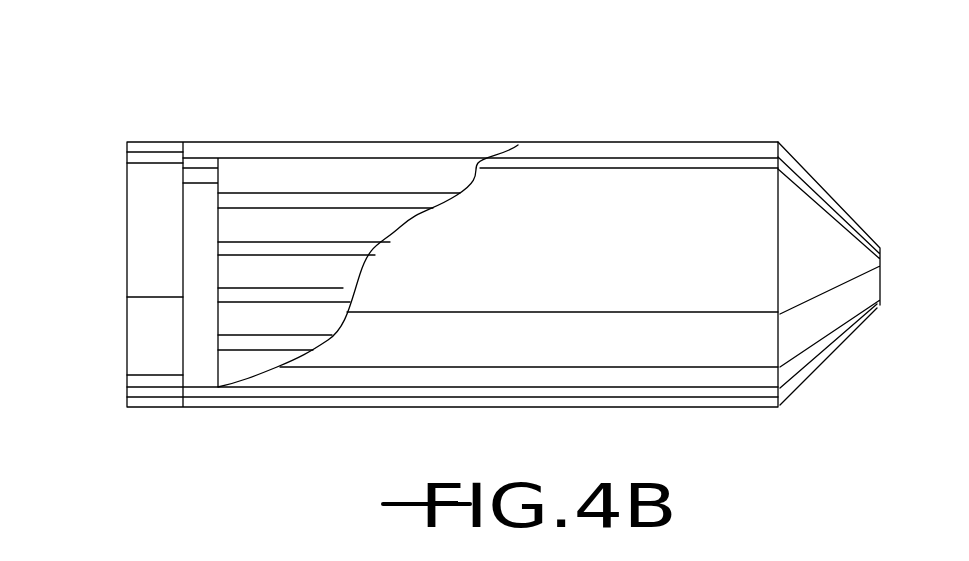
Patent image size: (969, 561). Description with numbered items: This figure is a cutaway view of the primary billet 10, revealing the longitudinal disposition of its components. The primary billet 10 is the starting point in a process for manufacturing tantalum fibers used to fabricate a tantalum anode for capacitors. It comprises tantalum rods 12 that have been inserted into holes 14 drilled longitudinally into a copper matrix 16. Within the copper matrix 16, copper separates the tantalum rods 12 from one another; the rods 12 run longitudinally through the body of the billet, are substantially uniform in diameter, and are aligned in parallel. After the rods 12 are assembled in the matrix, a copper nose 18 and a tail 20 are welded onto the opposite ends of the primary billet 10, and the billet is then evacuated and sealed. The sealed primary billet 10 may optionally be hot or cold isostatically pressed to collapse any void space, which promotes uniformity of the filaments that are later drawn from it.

The primary billet 10 is at (701, 118).
The tantalum rods 12 is at (322, 182).
The holes 14 is at (413, 157).
The copper matrix 16 is at (283, 200).
The copper nose 18 is at (807, 214).
The tail 20 is at (136, 246).